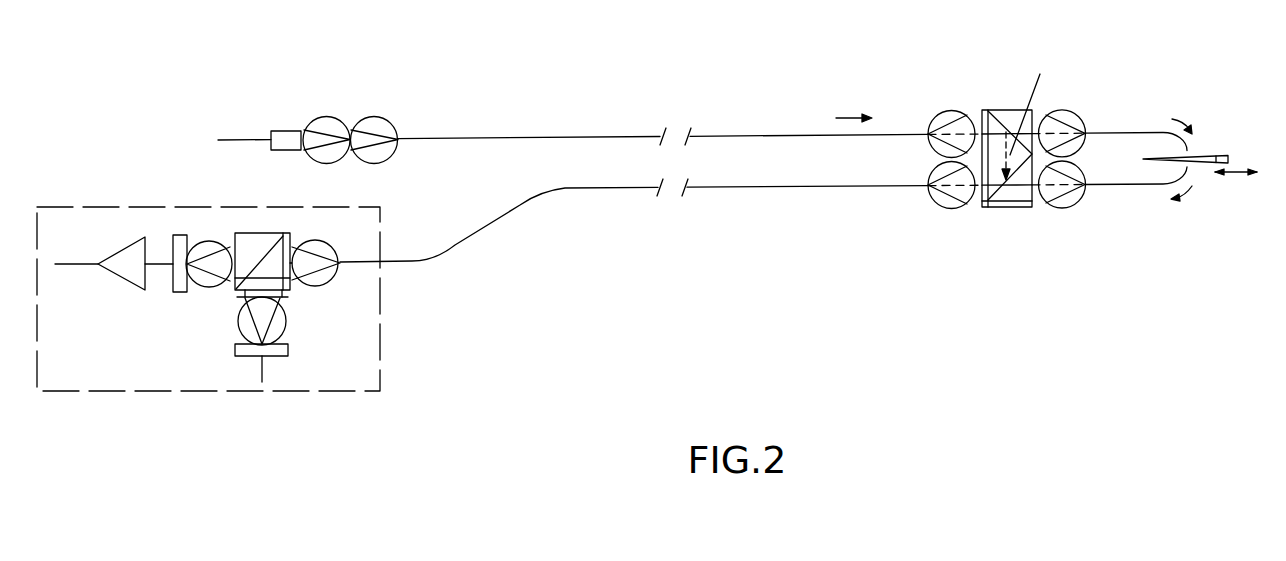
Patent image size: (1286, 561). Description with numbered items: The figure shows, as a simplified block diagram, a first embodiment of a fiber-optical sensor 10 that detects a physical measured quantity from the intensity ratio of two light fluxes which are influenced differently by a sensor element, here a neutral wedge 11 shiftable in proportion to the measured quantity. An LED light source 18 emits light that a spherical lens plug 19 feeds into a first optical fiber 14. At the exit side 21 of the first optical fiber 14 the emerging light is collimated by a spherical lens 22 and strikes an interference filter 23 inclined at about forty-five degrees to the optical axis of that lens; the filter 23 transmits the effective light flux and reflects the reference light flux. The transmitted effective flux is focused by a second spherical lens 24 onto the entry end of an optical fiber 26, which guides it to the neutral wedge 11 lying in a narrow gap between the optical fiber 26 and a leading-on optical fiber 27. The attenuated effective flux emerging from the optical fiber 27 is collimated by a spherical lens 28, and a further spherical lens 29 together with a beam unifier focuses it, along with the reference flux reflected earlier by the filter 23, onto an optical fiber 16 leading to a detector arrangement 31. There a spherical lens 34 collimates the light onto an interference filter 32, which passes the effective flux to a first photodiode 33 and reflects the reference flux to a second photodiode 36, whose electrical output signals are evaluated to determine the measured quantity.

The fiber-optical sensor 10 is at (787, 82).
The neutral wedge 11 is at (1216, 153).
The first optical fiber 14 is at (562, 137).
The optical fiber 16 is at (560, 190).
The light source 18 is at (283, 130).
The spherical lens plug 19 is at (351, 123).
The exit side 21 is at (928, 133).
The spherical lens 22 is at (948, 120).
The interference filter 23 is at (1003, 117).
The second spherical lens 24 is at (1062, 115).
The optical fiber 26 is at (1114, 131).
The leading-on optical fiber 27 is at (1117, 186).
The spherical lens 28 is at (1047, 203).
The further spherical lens 29 is at (950, 203).
The detector arrangement 31 is at (376, 352).
The interference filter 32 is at (243, 281).
The first photodiode 33 is at (180, 292).
The spherical lens 34 is at (324, 248).
The second photodiode 36 is at (288, 348).